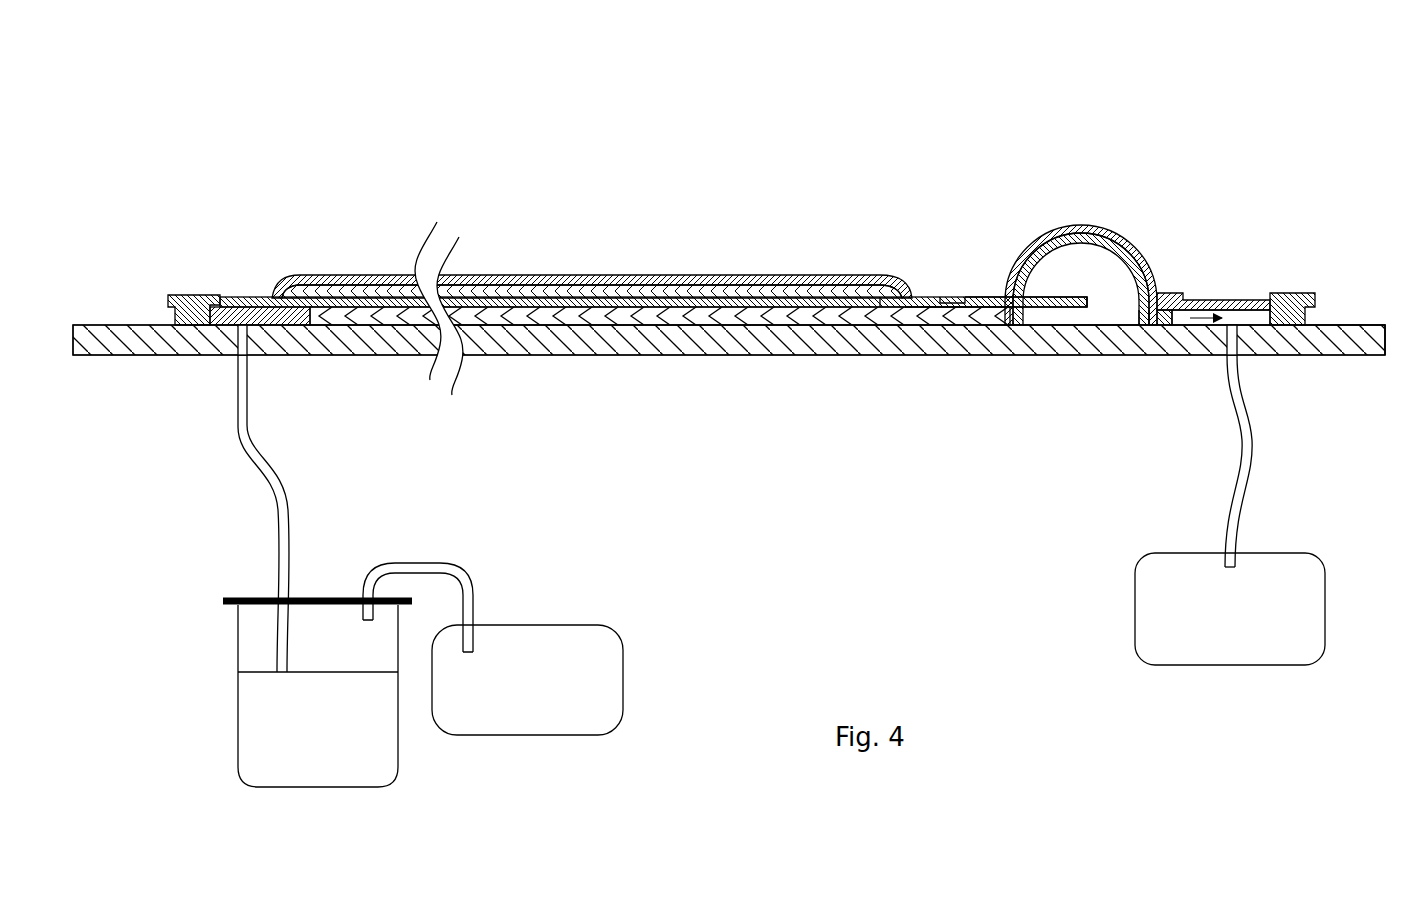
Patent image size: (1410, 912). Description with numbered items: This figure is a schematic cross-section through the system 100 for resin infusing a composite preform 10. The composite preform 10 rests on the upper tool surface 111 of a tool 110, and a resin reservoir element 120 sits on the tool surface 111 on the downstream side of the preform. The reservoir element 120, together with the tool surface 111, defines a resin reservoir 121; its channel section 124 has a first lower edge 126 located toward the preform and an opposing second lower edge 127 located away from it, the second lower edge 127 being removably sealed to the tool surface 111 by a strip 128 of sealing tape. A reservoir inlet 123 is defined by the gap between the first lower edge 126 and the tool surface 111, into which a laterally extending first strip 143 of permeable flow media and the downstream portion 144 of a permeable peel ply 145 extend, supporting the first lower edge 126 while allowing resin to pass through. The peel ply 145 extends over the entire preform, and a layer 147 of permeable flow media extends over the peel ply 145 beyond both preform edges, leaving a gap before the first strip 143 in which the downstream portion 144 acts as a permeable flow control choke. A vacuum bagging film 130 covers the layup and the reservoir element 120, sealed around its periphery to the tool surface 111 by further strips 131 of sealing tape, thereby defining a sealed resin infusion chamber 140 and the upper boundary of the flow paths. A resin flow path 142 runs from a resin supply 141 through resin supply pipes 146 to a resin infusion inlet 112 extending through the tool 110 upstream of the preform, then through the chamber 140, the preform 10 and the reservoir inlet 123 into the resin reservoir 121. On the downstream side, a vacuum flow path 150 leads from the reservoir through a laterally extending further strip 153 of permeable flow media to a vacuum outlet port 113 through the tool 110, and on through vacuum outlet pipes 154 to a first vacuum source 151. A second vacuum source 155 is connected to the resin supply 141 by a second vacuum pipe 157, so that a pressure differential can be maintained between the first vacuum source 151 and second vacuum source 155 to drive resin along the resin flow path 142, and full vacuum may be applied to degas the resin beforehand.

The system 100 is at (218, 152).
The composite preform 10 is at (640, 340).
The tool 110 is at (517, 340).
The upper tool surface 111 is at (1376, 325).
The resin infusion inlet 112 is at (246, 338).
The vacuum outlet port 113 is at (1247, 336).
The resin reservoir element 120 is at (1132, 310).
The resin reservoir 121 is at (1100, 300).
The reservoir inlet 123 is at (1036, 304).
The channel section 124 is at (1128, 250).
The first lower edge 126 is at (940, 328).
The second lower edge 127 is at (1150, 328).
The strip of sealing tape 128 is at (1122, 328).
The vacuum bagging film 130 is at (653, 230).
The further strips of sealing tape 131 is at (183, 340).
The resin infusion chamber 140 is at (584, 278).
The resin supply 141 is at (317, 694).
The resin flow path 142 is at (243, 322).
The first strip of permeable flow media 143 is at (1037, 318).
The downstream portion of the peel ply 144 is at (892, 318).
The peel ply 145 is at (656, 284).
The resin supply pipes 146 is at (285, 512).
The layer of permeable flow media 147 is at (715, 277).
The vacuum flow path 150 is at (1210, 328).
The first vacuum source 151 is at (1230, 609).
The further strip of permeable flow media 153 is at (1262, 294).
The vacuum outlet pipes 154 is at (1240, 497).
The second vacuum source 155 is at (527, 680).
The second vacuum pipe 157 is at (440, 575).